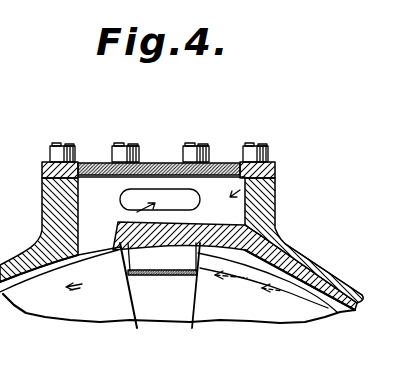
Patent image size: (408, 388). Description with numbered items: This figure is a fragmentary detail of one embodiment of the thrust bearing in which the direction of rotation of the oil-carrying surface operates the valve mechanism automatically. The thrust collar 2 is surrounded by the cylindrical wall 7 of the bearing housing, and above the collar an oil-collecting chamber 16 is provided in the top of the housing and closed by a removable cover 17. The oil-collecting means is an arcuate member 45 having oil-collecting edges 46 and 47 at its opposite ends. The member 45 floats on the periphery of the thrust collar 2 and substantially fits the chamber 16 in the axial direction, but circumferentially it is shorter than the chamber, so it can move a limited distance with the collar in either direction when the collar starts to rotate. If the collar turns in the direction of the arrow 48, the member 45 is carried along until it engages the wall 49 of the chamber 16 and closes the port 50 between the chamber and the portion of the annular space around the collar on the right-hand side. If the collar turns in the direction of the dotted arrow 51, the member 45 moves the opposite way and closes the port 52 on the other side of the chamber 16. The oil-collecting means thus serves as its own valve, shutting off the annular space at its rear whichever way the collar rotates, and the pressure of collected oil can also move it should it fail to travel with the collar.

The thrust collar 2 is at (307, 285).
The cylindrical wall 7 is at (315, 272).
The oil-collecting chamber 16 is at (262, 192).
The removable cover 17 is at (147, 173).
The arcuate member 45 is at (174, 228).
The oil-collecting edge 46 is at (96, 251).
The oil-collecting edge 47 is at (260, 252).
The arrow 48 is at (110, 279).
The wall 49 is at (262, 208).
The port 50 is at (273, 237).
The dotted arrow 51 is at (235, 285).
The port 52 is at (89, 255).